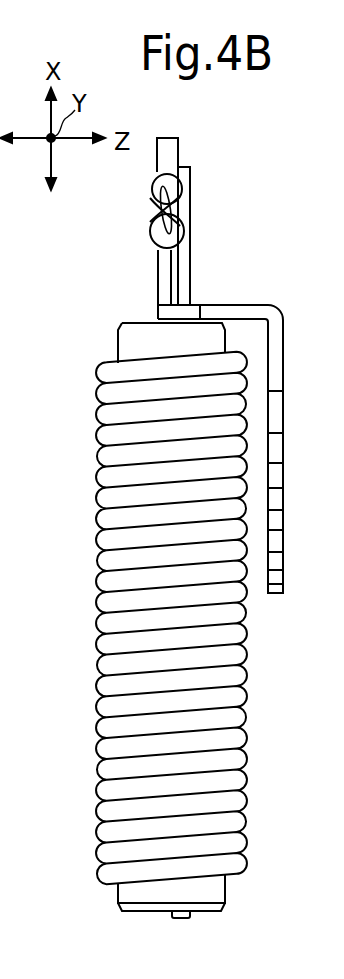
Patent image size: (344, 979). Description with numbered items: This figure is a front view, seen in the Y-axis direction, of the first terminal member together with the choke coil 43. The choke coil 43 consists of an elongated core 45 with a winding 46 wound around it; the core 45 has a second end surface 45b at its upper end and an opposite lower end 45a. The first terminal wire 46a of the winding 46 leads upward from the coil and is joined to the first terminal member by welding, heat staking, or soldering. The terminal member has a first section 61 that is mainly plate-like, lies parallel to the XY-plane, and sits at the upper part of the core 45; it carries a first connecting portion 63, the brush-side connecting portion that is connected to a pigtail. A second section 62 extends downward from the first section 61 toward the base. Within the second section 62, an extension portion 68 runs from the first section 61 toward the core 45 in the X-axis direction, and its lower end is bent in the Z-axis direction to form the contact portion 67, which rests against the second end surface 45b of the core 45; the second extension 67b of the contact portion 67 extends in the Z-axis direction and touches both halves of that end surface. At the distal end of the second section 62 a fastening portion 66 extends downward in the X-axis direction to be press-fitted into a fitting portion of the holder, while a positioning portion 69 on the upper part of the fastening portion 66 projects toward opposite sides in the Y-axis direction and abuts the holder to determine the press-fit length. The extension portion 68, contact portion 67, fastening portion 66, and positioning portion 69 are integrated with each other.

The choke coil 43 is at (248, 672).
The core 45 is at (218, 890).
The lower end portion of holder 45a is at (158, 913).
The second end surface 45b is at (128, 322).
The winding 46 is at (202, 618).
The first terminal wire 46a is at (170, 139).
The first section 61 is at (189, 183).
The second section 62 is at (268, 305).
The first connecting portion 63 is at (150, 190).
The fastening portion 66 is at (276, 498).
The contact portion 67 is at (135, 293).
The second extension 67b is at (168, 308).
The extension portion 68 is at (183, 272).
The positioning portion 69 is at (276, 411).